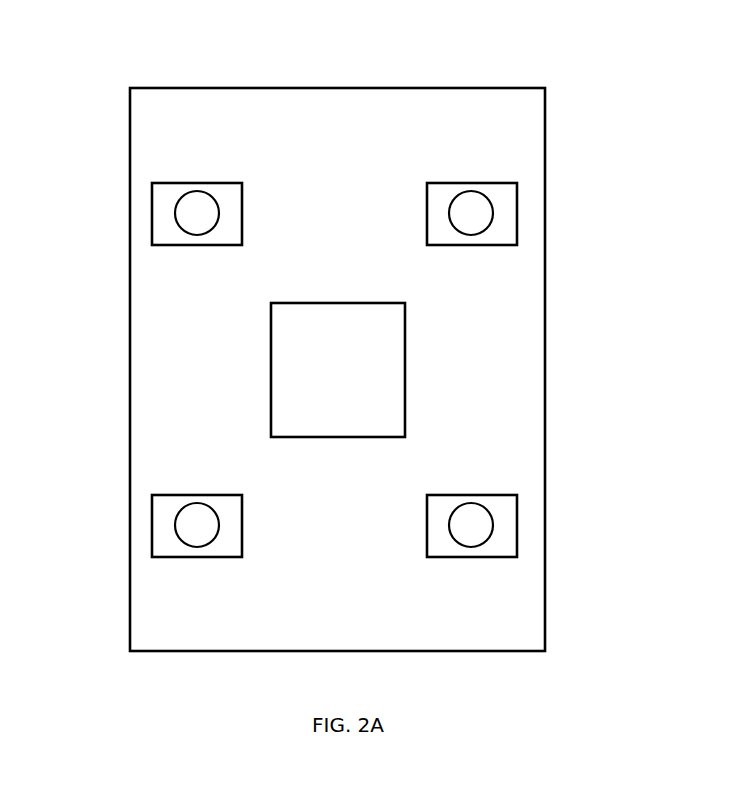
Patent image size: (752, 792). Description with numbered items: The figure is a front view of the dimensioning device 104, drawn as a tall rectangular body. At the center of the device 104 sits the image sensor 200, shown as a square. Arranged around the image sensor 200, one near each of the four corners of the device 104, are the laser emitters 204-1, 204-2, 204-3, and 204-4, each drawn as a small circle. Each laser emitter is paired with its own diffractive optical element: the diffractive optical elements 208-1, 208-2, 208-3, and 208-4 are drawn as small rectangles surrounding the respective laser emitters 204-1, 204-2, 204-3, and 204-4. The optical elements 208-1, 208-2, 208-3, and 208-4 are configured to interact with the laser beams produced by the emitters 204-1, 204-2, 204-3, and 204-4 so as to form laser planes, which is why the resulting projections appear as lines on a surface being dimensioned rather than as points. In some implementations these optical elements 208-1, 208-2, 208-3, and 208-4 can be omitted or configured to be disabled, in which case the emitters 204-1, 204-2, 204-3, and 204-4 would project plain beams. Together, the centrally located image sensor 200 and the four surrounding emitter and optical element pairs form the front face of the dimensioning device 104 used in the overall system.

The dimensioning device 104 is at (274, 78).
The image sensor 200 is at (405, 369).
The laser emitter 204-1 is at (181, 199).
The laser emitter 204-2 is at (487, 199).
The laser emitter 204-3 is at (178, 512).
The laser emitter 204-4 is at (487, 510).
The diffractive optical element 208-1 is at (152, 215).
The diffractive optical element 208-2 is at (517, 212).
The diffractive optical element 208-3 is at (152, 527).
The diffractive optical element 208-4 is at (517, 526).